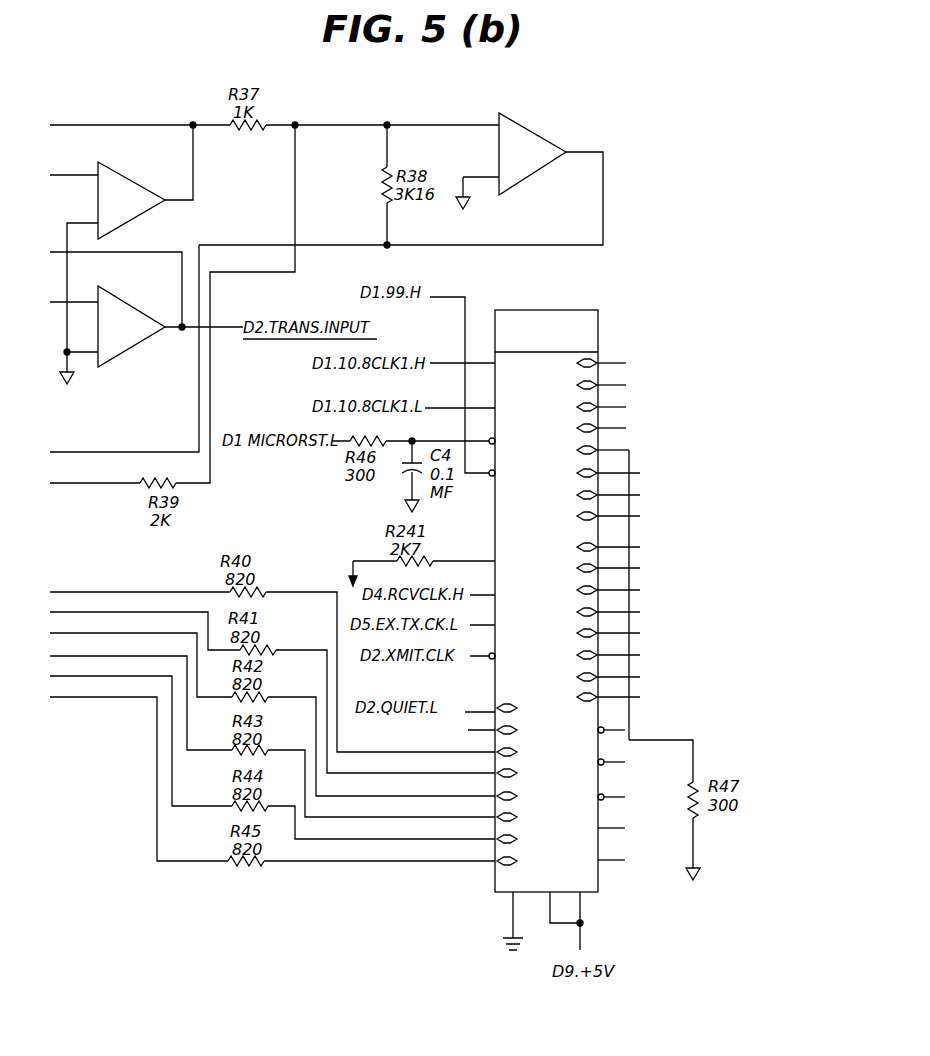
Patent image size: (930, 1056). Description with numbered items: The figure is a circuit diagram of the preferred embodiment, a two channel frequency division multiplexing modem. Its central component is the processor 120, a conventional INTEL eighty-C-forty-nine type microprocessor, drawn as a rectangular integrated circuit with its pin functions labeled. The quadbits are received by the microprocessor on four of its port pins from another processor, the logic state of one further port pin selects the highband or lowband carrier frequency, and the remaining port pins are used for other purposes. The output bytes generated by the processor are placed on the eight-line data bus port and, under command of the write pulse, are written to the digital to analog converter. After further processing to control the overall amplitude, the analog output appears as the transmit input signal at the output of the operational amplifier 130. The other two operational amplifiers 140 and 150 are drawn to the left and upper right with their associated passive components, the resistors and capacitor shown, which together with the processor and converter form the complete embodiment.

The processor 120 is at (540, 305).
The operational amplifier 130 is at (128, 340).
The operational amplifier 140 is at (128, 214).
The operational amplifier 150 is at (521, 178).